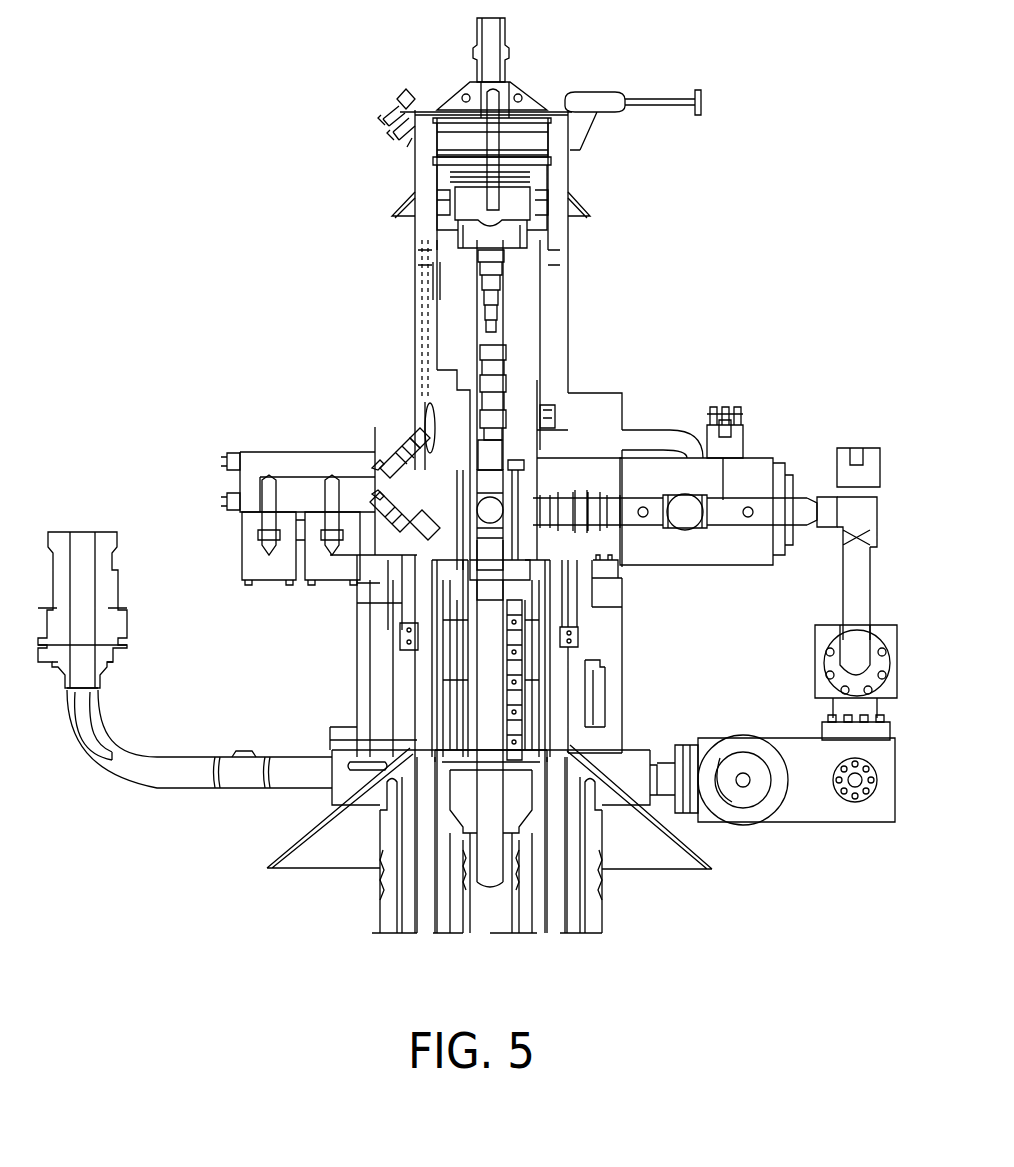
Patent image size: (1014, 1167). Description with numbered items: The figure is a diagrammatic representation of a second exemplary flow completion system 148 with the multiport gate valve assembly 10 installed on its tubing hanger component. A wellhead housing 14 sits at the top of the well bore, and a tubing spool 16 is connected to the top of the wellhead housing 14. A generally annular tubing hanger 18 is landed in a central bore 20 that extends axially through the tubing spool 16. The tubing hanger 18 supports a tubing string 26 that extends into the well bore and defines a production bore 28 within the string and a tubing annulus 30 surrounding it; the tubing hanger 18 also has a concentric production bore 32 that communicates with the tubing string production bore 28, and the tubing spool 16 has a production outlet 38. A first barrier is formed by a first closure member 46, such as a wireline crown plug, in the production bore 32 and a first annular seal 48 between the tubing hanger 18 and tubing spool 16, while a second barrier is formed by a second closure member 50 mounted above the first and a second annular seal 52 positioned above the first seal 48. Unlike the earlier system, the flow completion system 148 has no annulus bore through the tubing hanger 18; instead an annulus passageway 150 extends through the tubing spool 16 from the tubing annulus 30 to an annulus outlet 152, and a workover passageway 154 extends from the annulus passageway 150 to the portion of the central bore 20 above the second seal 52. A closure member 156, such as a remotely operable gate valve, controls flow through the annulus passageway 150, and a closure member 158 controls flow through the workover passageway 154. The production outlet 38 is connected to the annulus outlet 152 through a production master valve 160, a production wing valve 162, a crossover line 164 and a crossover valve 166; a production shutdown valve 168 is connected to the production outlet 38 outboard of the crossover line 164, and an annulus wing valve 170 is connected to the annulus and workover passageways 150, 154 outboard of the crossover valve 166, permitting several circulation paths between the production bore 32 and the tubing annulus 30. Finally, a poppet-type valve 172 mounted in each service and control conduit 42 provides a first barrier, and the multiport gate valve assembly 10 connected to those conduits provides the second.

The multiport gate valve assembly 10 is at (536, 680).
The wellhead housing 14 is at (600, 910).
The tubing spool 16 is at (637, 397).
The tubing hanger 18 is at (553, 437).
The central bore 20 is at (552, 318).
The tubing string 26 is at (515, 788).
The production bore 28 is at (515, 563).
The tubing annulus 30 is at (525, 812).
The production bore 32 is at (497, 466).
The production outlet 38 is at (573, 521).
The service and control conduits 42 is at (462, 500).
The first closure member 46 is at (505, 390).
The first annular seal 48 is at (537, 493).
The second closure member 50 is at (500, 295).
The second annular seal 52 is at (440, 272).
The flow completion system 148 is at (730, 292).
The annulus passageway 150 is at (395, 610).
The annulus outlet 152 is at (373, 480).
The workover passageway 154 is at (432, 430).
The closure member 156 is at (385, 575).
The closure member 158 is at (402, 452).
The production master valve 160 is at (582, 496).
The production wing valve 162 is at (691, 528).
The crossover line 164 is at (638, 442).
The crossover valve 166 is at (312, 555).
The production shutdown valve 168 is at (822, 648).
The annulus wing valve 170 is at (255, 545).
The poppet-type valve 172 is at (448, 410).